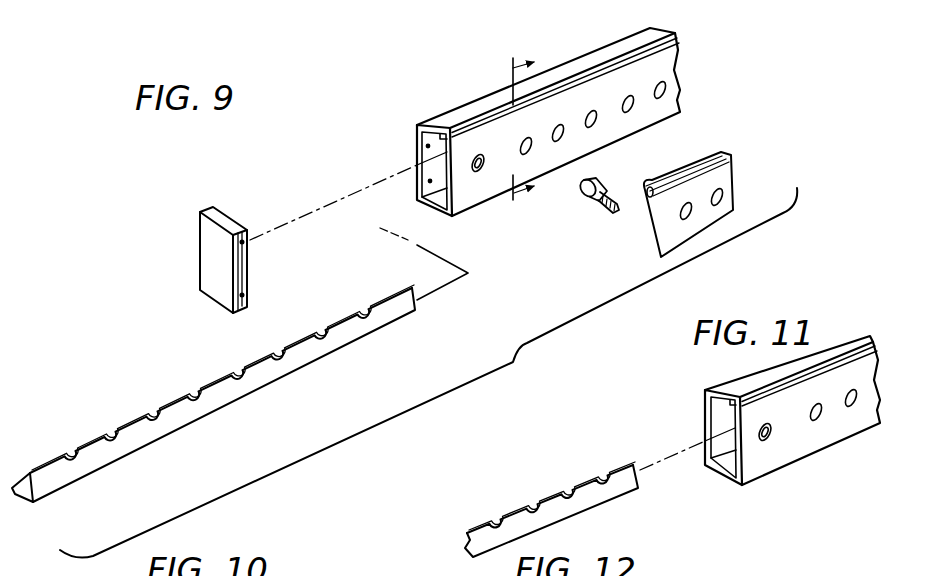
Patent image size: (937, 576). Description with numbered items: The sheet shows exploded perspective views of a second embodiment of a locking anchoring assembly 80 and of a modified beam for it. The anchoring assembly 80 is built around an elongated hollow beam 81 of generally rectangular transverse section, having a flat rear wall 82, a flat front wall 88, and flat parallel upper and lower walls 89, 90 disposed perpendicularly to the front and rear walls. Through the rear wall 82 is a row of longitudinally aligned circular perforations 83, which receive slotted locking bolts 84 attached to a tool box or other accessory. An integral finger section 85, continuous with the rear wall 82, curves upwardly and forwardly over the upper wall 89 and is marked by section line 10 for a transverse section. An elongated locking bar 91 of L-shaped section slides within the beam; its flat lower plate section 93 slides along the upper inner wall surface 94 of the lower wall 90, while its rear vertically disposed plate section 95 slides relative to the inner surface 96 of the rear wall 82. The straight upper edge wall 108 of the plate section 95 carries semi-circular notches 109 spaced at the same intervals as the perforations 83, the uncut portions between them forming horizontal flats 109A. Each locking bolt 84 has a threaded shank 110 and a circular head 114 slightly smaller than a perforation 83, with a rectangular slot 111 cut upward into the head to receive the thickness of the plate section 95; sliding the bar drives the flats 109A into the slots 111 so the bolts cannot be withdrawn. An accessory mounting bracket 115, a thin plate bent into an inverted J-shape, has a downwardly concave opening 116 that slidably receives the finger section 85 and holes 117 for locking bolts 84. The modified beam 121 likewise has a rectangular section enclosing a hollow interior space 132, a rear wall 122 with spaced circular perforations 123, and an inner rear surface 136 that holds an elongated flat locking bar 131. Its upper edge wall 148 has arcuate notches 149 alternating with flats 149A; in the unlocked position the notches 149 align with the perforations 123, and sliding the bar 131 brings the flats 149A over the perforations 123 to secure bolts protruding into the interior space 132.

In FIG. 9, the section line 10- 10 is at (538, 119).
In FIG. 9, the anchoring assembly 80 is at (502, 76).
In FIG. 9, the elongated hollow beam 81 is at (585, 52).
In FIG. 9, the rear wall 82 is at (488, 187).
In FIG. 9, the perforations 83 is at (632, 108).
In FIG. 9, the slotted locking bolts 84 is at (637, 169).
In FIG. 9, the finger section 85 is at (478, 108).
In FIG. 9, the front wall 88 is at (416, 140).
In FIG. 9, the upper wall 89 is at (433, 113).
In FIG. 9, the lower wall 90 is at (438, 215).
In FIG. 9, the locking bar 91 is at (268, 392).
In FIG. 9, the lower plate section 93 is at (18, 500).
In FIG. 9, the upper inner wall surface 94 is at (418, 200).
In FIG. 9, the rear vertically disposed plate section 95 is at (82, 465).
In FIG. 9, the inner surface of rear wall 96 is at (412, 158).
In FIG. 9, the upper edge wall 108 is at (223, 375).
In FIG. 9, the notches 109 is at (193, 397).
In FIG. 9, the flats 109A is at (125, 430).
In FIG. 9, the threaded shank 110 is at (604, 211).
In FIG. 9, the slot 111 is at (584, 201).
In FIG. 9, the bolt head 114 is at (578, 192).
In FIG. 9, the accessory mounting bracket 115 is at (738, 168).
In FIG. 9, the opening 116 is at (652, 199).
In FIG. 9, the holes 117 is at (692, 218).
In FIG. 11, the modified anchoring assembly beam 121 is at (815, 351).
In FIG. 11, the rear wall 122 is at (765, 458).
In FIG. 11, the perforations 123 is at (820, 420).
In FIG. 11, the locking bar 131 is at (512, 497).
In FIG. 11, the hollow interior space 132 is at (720, 467).
In FIG. 11, the inner rear surface 136 is at (712, 440).
In FIG. 11, the upper edge wall 148 is at (483, 520).
In FIG. 11, the notches 149 is at (567, 495).
In FIG. 11, the flats 149A is at (612, 470).